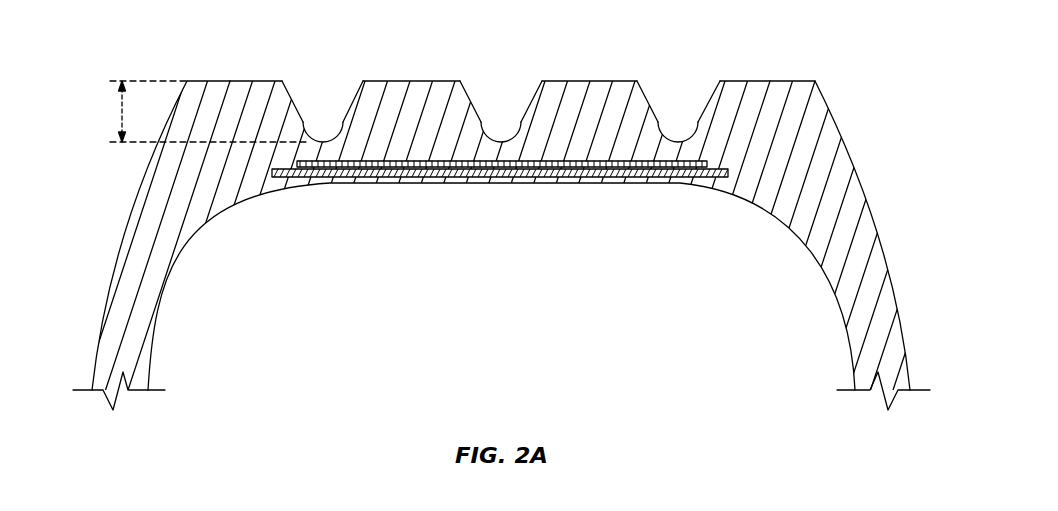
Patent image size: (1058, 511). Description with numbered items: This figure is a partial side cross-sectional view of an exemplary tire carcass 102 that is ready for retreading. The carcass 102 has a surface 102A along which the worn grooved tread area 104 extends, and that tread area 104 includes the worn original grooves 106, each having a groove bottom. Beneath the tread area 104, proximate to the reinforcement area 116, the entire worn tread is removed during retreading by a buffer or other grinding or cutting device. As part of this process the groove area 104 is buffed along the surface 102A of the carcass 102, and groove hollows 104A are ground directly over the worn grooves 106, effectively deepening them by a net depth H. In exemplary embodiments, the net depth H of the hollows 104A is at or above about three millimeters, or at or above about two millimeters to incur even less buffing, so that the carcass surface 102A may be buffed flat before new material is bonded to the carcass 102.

The carcass 102 is at (140, 185).
The surface 102A is at (200, 81).
The worn grooved tread area 104 is at (410, 81).
The groove hollows 104A is at (350, 122).
The worn original grooves 106 is at (362, 84).
The reinforcement area 116 is at (500, 175).
The net depth H is at (122, 112).